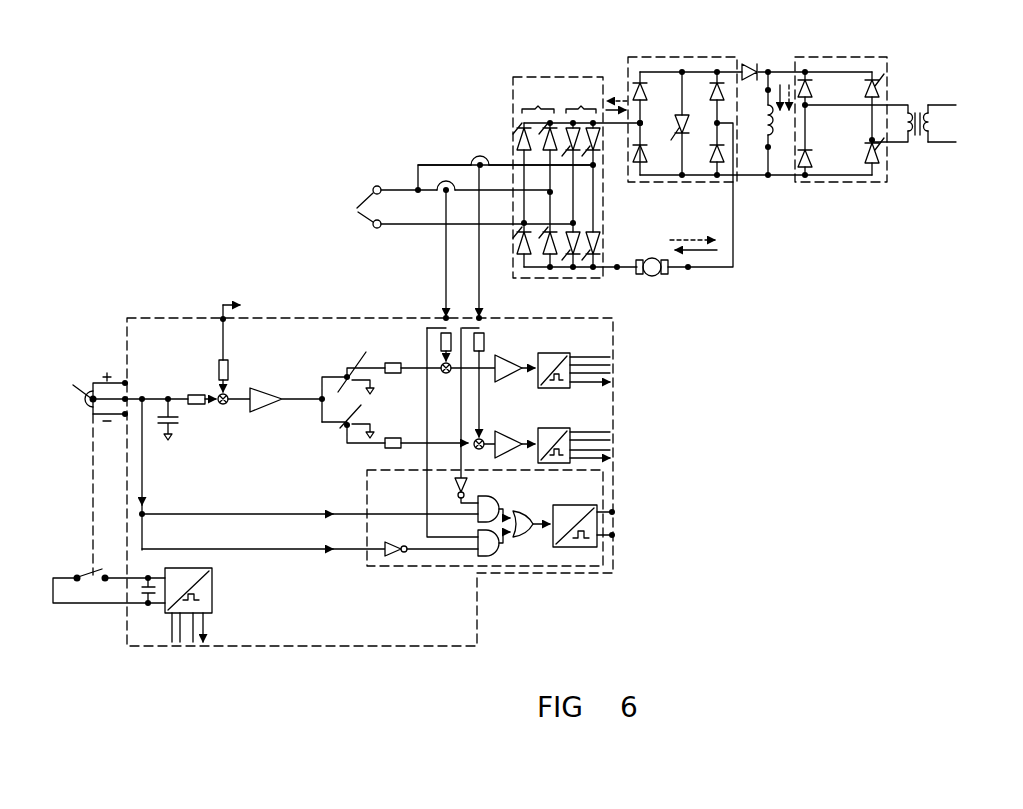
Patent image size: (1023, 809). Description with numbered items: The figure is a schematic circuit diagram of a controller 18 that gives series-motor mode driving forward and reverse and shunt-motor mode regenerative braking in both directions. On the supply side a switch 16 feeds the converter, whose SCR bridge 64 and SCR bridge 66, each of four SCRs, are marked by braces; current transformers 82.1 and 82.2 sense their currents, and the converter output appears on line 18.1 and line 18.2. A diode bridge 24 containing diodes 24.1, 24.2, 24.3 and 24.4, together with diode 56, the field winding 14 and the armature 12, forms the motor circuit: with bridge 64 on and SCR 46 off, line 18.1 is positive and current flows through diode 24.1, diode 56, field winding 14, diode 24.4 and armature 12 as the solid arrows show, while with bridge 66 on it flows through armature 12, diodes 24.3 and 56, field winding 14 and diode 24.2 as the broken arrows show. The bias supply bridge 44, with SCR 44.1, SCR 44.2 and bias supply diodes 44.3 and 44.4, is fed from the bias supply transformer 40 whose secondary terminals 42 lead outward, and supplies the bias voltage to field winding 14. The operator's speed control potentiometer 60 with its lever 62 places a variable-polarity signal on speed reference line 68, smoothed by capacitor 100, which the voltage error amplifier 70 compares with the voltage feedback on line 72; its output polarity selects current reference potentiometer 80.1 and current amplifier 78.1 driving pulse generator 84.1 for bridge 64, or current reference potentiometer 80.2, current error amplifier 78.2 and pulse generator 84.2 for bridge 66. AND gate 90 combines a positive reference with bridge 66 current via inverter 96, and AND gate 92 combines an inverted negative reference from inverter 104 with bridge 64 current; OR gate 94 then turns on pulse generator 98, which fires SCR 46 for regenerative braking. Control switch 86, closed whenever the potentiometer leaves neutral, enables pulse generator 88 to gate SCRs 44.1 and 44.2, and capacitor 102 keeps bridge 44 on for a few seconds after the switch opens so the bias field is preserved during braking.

The armature 12 is at (656, 276).
The field winding 14 is at (777, 120).
The AC supply switch 16 is at (361, 222).
The controller 18 is at (542, 76).
The line 18.1 is at (612, 130).
The line 18.2 is at (606, 267).
The intermediate converter bridge 24 is at (634, 57).
The diode 24.1 is at (666, 102).
The diode 24.2 is at (648, 162).
The diode 24.3 is at (743, 98).
The diode 24.4 is at (725, 160).
The bias supply transformer 40 is at (919, 146).
The transformer secondary output terminals 42 is at (959, 106).
The bias supply bridge 44 is at (884, 94).
The SCR 44.1 is at (882, 86).
The SCR 44.2 is at (880, 162).
The bias supply diode 44.3 is at (814, 88).
The bias supply diode 44.4 is at (813, 165).
The SCR 46 is at (690, 118).
The diode 56 is at (750, 64).
The speed control potentiometer 60 is at (82, 416).
The lever 62 is at (86, 378).
The SCR bridge 64 is at (530, 101).
The SCR bridge 66 is at (590, 102).
The speed reference line 68 is at (144, 396).
The voltage error amplifier 70 is at (262, 388).
The voltage feedback line 72 is at (218, 328).
The current amplifier 78.1 is at (519, 349).
The current error amplifier 78.2 is at (516, 422).
The current reference potentiometer 80.1 is at (352, 377).
The current reference potentiometer 80.2 is at (356, 416).
The current transformer 82.1 is at (434, 192).
The current feedback transformer 82.2 is at (475, 158).
The pulse generator 84.1 is at (554, 356).
The pulse generator 84.2 is at (550, 431).
The control switch 86 is at (84, 564).
The pulse generator 88 is at (208, 592).
The AND gate 90 is at (476, 510).
The AND gate 92 is at (491, 551).
The OR gate 94 is at (522, 520).
The inverter 96 is at (470, 486).
The pulse generator 98 is at (588, 504).
The capacitor 100 is at (179, 433).
The capacitor 102 is at (154, 582).
The inverter 104 is at (393, 542).